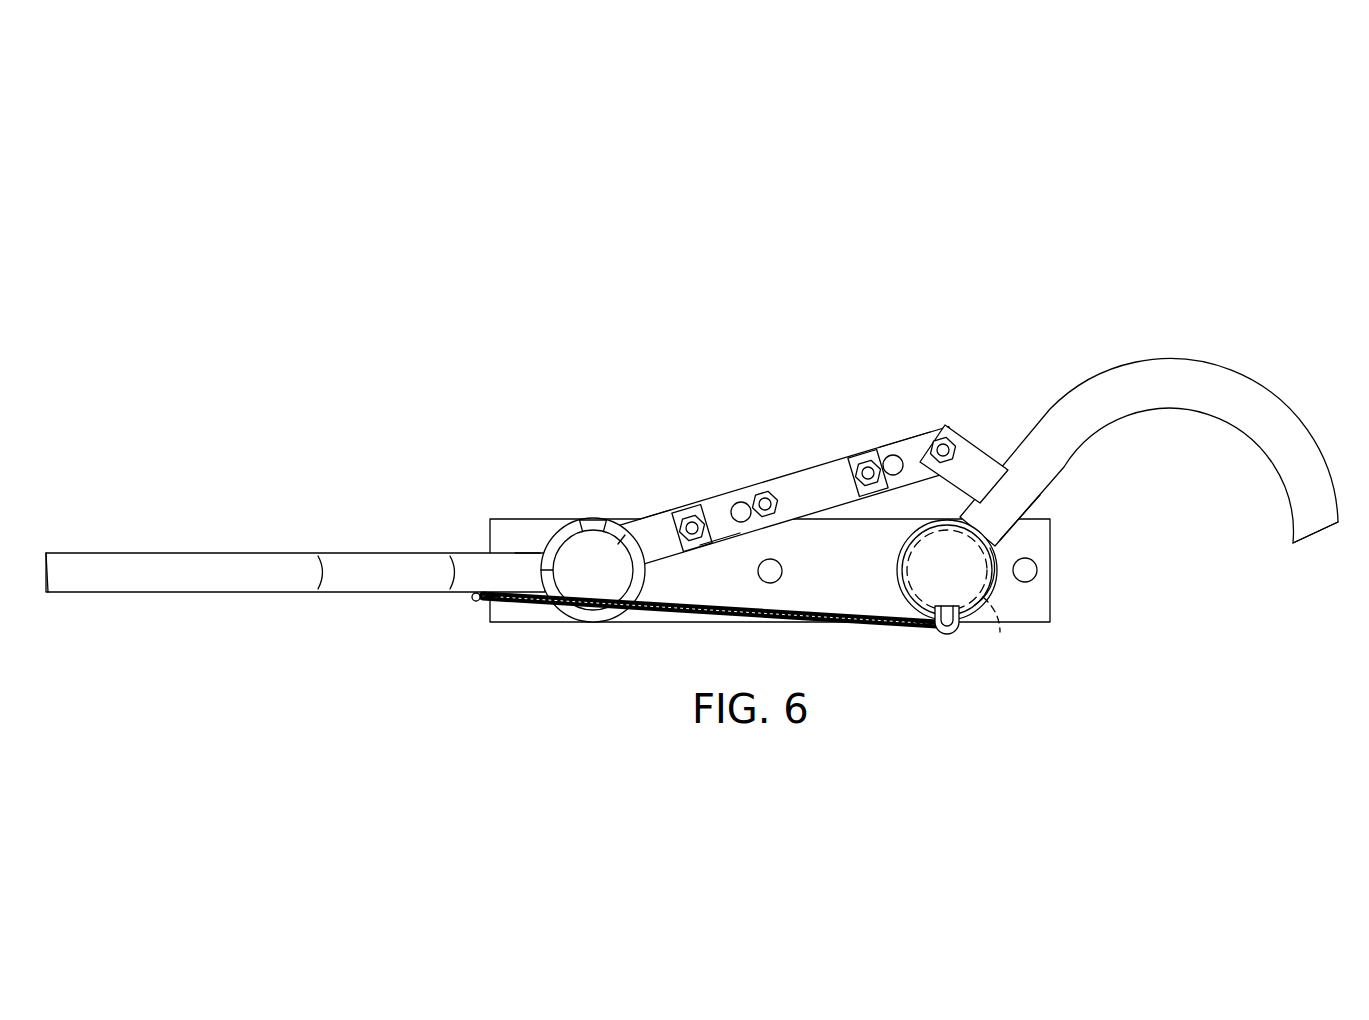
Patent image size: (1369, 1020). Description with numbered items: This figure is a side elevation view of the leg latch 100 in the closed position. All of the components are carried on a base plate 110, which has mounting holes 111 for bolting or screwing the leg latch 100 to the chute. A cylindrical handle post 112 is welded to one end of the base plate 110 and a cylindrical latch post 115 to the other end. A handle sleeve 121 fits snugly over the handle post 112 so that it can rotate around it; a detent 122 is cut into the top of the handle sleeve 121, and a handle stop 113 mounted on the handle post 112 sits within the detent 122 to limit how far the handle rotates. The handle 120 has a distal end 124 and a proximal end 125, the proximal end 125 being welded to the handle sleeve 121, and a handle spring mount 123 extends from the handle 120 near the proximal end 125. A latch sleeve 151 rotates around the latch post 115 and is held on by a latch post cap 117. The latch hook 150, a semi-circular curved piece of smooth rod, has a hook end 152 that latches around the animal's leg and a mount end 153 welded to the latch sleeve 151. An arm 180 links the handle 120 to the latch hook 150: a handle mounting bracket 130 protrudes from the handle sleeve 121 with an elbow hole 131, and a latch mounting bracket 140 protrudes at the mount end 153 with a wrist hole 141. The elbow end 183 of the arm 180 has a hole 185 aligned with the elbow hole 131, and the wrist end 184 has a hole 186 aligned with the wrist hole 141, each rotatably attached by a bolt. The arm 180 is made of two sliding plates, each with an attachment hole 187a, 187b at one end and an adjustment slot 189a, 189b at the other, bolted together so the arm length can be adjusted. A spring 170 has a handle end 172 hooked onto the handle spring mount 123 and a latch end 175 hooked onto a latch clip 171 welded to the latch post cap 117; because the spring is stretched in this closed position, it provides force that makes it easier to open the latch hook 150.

The leg latch 100 is at (497, 200).
The base plate 110 is at (653, 622).
The mounting holes 111 is at (783, 571).
The handle post 112 is at (621, 525).
The handle stop 113 is at (592, 520).
The latch post 115 is at (1001, 633).
The latch post cap 117 is at (994, 579).
The handle 120 is at (295, 562).
The handle sleeve 121 is at (562, 618).
The detent 122 is at (588, 573).
The handle spring mount 123 is at (474, 601).
The distal end 124 is at (64, 556).
The proximal end 125 is at (520, 560).
The handle mounting bracket 130 is at (653, 540).
The elbow hole 131 is at (665, 466).
The latch mounting bracket 140 is at (942, 430).
The wrist hole 141 is at (944, 440).
The latch hook 150 is at (1149, 441).
The latch sleeve 151 is at (966, 593).
The hook end 152 is at (1292, 540).
The mount end 153 is at (993, 523).
The spring 170 is at (671, 640).
The latch clip 171 is at (951, 638).
The handle end 172 is at (497, 607).
The latch end 175 is at (907, 628).
The arm 180 is at (777, 491).
The elbow end 183 is at (713, 540).
The wrist end 184 is at (905, 447).
The hole 185 is at (693, 515).
The hole 186 is at (968, 441).
The attachment hole 187a is at (770, 512).
The attachment hole 187b is at (870, 484).
The adjustment slot 189a is at (889, 461).
The adjustment slot 189b is at (741, 503).